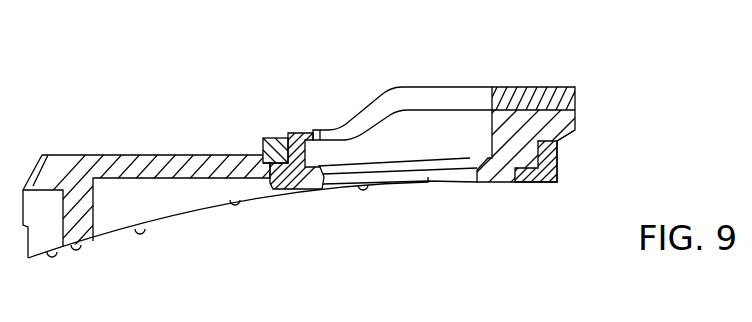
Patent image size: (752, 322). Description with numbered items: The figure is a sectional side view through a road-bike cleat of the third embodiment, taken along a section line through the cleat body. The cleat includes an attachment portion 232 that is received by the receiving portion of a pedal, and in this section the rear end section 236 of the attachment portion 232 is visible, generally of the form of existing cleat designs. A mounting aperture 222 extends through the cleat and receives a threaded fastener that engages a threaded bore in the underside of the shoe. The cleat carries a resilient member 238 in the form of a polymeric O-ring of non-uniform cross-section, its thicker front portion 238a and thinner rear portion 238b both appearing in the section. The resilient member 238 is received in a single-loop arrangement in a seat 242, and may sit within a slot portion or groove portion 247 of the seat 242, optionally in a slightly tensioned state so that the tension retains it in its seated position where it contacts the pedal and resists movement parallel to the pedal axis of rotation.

The attachment portion 232 is at (214, 145).
The rear end section 236 is at (83, 155).
The resilient member 238 is at (423, 159).
The front portion 238a is at (527, 183).
The rear portion 238b is at (274, 138).
The seat 242 is at (273, 190).
The mounting aperture 222 is at (402, 162).
The slot portion or groove portion 247 is at (570, 143).